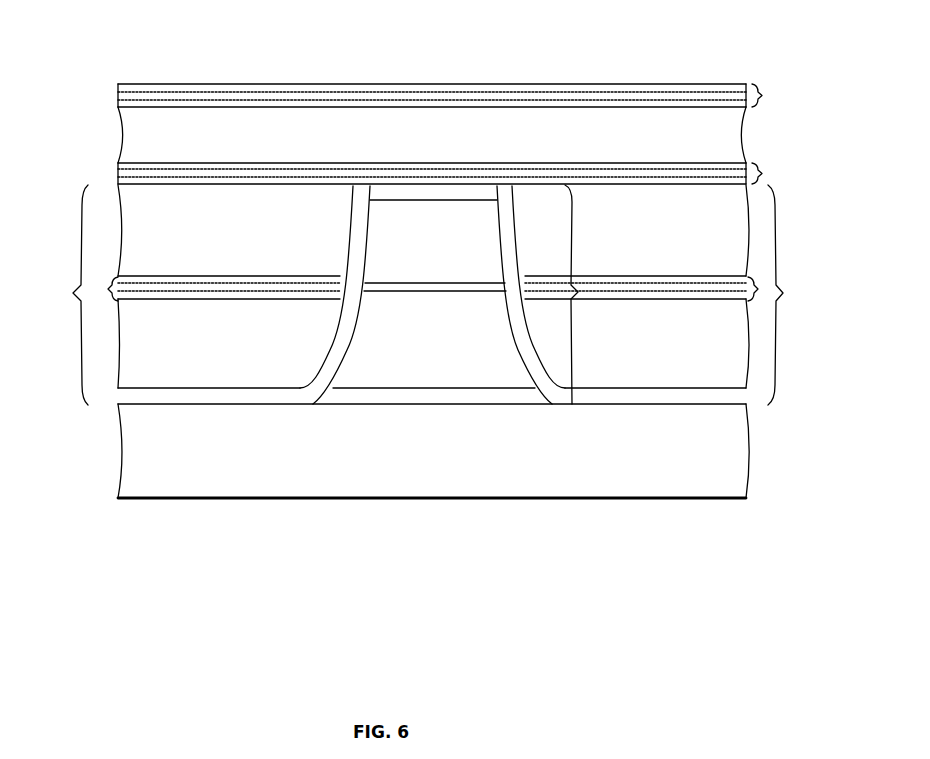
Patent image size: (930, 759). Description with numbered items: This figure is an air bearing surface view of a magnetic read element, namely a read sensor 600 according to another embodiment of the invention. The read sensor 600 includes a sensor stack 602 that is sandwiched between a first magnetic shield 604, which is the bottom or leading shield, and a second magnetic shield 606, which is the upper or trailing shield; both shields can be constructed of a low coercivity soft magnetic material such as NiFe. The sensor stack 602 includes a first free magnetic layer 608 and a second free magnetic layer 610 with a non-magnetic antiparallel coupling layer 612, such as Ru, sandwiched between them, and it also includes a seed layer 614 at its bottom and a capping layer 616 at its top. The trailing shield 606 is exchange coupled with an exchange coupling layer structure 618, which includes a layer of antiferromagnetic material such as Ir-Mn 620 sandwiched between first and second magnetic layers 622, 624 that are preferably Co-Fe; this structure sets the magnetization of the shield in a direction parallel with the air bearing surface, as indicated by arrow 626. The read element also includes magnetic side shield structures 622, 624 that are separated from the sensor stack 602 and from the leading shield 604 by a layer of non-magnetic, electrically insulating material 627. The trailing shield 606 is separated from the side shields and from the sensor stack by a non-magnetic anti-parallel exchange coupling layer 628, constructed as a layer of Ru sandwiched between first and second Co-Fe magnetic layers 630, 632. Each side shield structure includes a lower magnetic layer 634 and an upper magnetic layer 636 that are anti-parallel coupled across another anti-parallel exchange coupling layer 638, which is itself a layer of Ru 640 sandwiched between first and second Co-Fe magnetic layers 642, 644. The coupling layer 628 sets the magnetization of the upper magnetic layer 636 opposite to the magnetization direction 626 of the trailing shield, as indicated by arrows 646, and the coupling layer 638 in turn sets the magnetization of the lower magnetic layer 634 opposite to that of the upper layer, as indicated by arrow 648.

The read sensor 600 is at (515, 84).
The sensor stack 602 is at (573, 207).
The first magnetic shield 604 is at (481, 452).
The second magnetic shield 606 is at (321, 140).
The first free magnetic layer 608 is at (460, 344).
The second free magnetic layer 610 is at (458, 250).
The non-magnetic antiparallel coupling layer 612 is at (425, 287).
The seed layer 614 is at (455, 397).
The capping layer 616 is at (407, 195).
The exchange coupling layer structure 618 is at (762, 85).
The antiferromagnetic layer 620 is at (120, 93).
The magnetic side shield structure 622 is at (120, 103).
The magnetic side shield structure 624 is at (120, 85).
The magnetization direction arrow 626 is at (370, 135).
The non-magnetic electrically insulating layer 627 is at (203, 398).
The anti-parallel exchange coupling layer 628 is at (120, 173).
The first magnetic layer 630 is at (120, 179).
The second magnetic layer 632 is at (120, 166).
The first magnetic layer 634 is at (256, 370).
The second magnetic layer 636 is at (256, 250).
The anti-parallel exchange coupling layer 638 is at (108, 287).
The Ru layer 640 is at (150, 290).
The first magnetic layer 642 is at (150, 297).
The second magnetic layer 644 is at (150, 283).
The magnetization direction arrows 646 is at (278, 233).
The magnetization direction arrow 648 is at (182, 342).